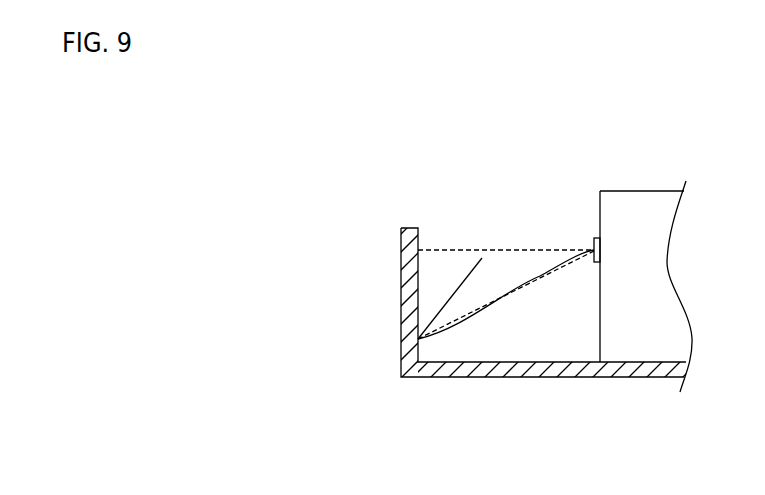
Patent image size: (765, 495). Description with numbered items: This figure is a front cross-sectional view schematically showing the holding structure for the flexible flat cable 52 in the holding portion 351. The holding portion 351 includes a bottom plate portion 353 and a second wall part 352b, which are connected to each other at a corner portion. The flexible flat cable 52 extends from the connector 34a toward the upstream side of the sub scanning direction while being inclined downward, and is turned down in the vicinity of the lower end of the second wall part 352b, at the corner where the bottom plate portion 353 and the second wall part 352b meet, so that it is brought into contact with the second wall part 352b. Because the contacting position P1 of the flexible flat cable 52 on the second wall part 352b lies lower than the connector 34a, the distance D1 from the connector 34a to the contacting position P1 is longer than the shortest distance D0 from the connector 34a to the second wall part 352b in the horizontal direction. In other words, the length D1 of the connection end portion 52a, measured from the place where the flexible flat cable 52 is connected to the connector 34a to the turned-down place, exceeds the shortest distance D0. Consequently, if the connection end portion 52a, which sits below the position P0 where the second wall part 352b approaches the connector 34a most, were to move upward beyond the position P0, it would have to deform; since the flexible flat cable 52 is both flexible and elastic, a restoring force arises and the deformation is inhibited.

The holding portion 351 is at (418, 380).
The second wall part 352b is at (402, 353).
The bottom plate portion 353 is at (508, 380).
The connector 34a is at (593, 239).
The flexible flat cable 52 is at (460, 279).
The connection end portion 52a is at (550, 258).
The position where the second wall part approaches the connector most P0 is at (417, 250).
The contacting position P1 is at (417, 339).
The shortest distance from the connector to the second wall part D0 is at (594, 238).
The distance from the connector to the contacting position D1 is at (418, 339).